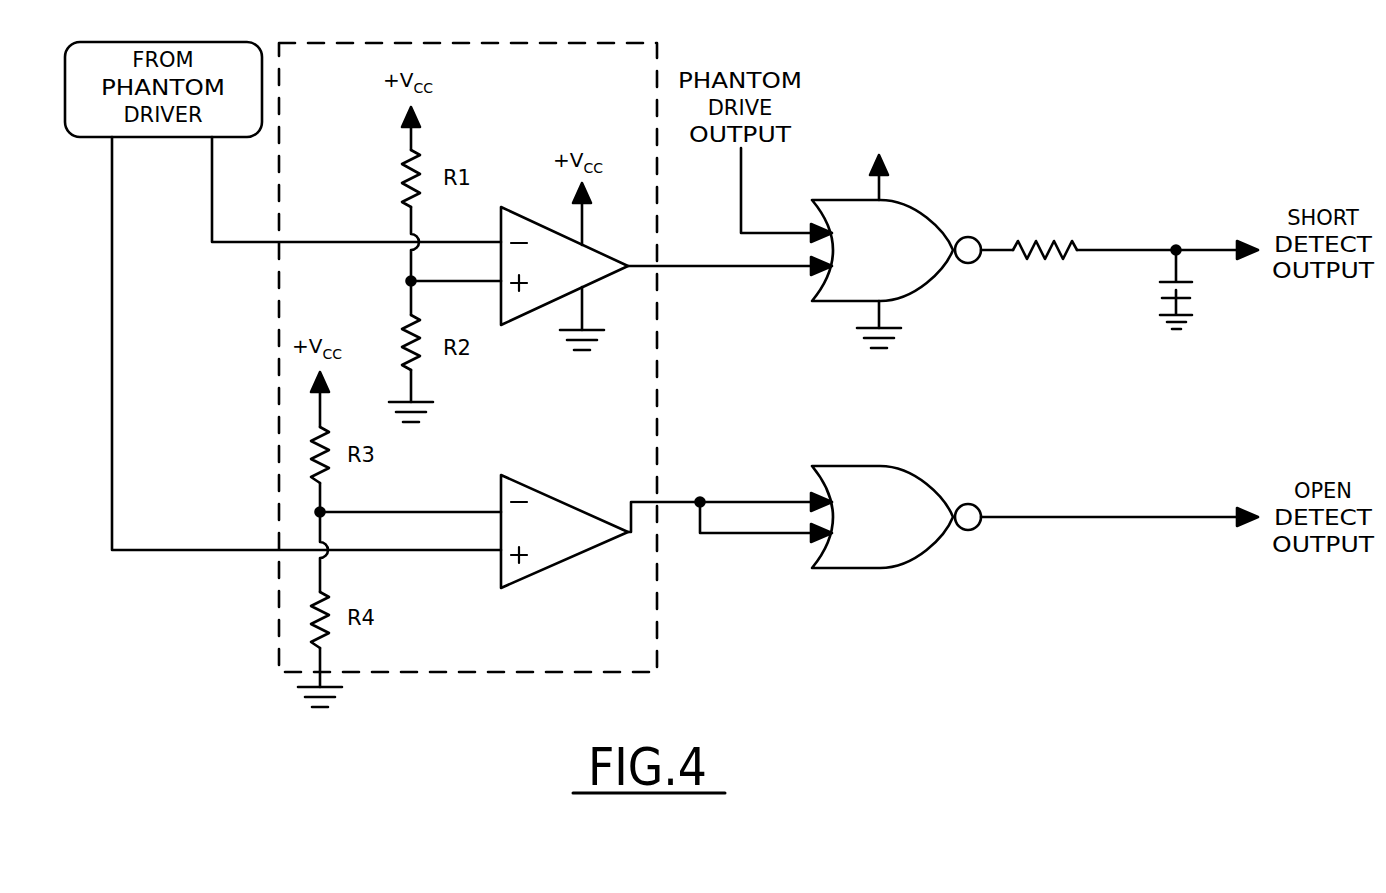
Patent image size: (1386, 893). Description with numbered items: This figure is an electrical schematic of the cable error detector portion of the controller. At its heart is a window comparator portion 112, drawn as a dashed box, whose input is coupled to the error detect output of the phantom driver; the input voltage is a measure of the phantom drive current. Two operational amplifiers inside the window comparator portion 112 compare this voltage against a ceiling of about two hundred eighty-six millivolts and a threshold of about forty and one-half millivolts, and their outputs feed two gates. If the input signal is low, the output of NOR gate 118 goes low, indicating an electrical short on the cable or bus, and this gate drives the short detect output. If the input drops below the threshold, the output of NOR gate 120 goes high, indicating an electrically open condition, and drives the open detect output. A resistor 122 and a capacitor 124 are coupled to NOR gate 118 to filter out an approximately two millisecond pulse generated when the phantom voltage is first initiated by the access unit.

The window comparator portion 112 is at (654, 643).
The NOR gate 118 is at (927, 215).
The NOR gate 120 is at (912, 477).
The resistor 122 is at (1063, 242).
The capacitor 124 is at (1158, 294).